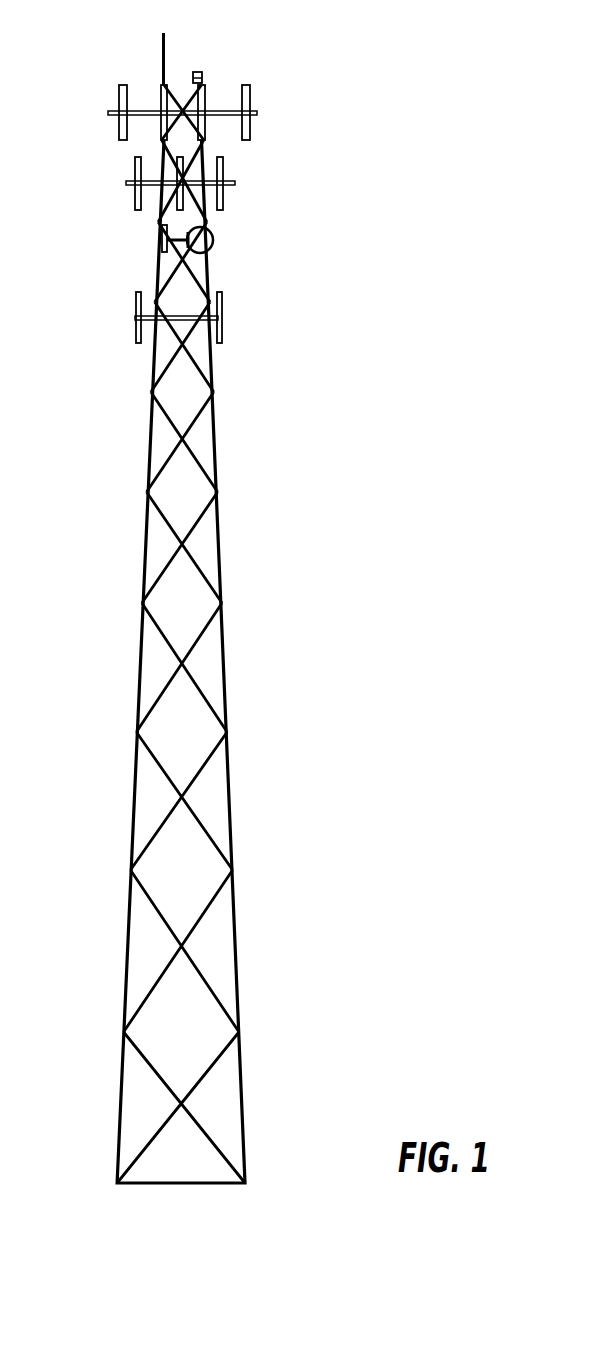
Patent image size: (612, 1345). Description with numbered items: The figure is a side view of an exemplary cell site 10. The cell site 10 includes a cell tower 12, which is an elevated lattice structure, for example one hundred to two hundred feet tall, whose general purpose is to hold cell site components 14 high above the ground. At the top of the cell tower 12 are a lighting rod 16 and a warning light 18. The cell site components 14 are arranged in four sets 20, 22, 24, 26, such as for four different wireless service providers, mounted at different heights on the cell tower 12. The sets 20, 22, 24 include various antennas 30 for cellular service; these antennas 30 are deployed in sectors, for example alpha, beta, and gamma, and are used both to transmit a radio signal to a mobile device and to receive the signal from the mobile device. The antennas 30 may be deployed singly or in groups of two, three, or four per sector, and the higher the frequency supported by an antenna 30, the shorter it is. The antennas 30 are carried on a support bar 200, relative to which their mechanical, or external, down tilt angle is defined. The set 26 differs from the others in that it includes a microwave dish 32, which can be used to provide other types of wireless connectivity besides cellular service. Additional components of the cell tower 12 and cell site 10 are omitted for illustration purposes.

The cell site 10 is at (401, 206).
The cell tower 12 is at (236, 900).
The cell site components 14 is at (302, 134).
The lighting rod 16 is at (165, 56).
The warning light 18 is at (202, 70).
The set of cell site components 20 is at (108, 111).
The set of cell site components 22 is at (127, 182).
The set of cell site components 24 is at (136, 300).
The set of cell site components 26 is at (158, 240).
The antenna 30 is at (250, 96).
The microwave dish 32 is at (209, 236).
The support bar 200 is at (136, 111).